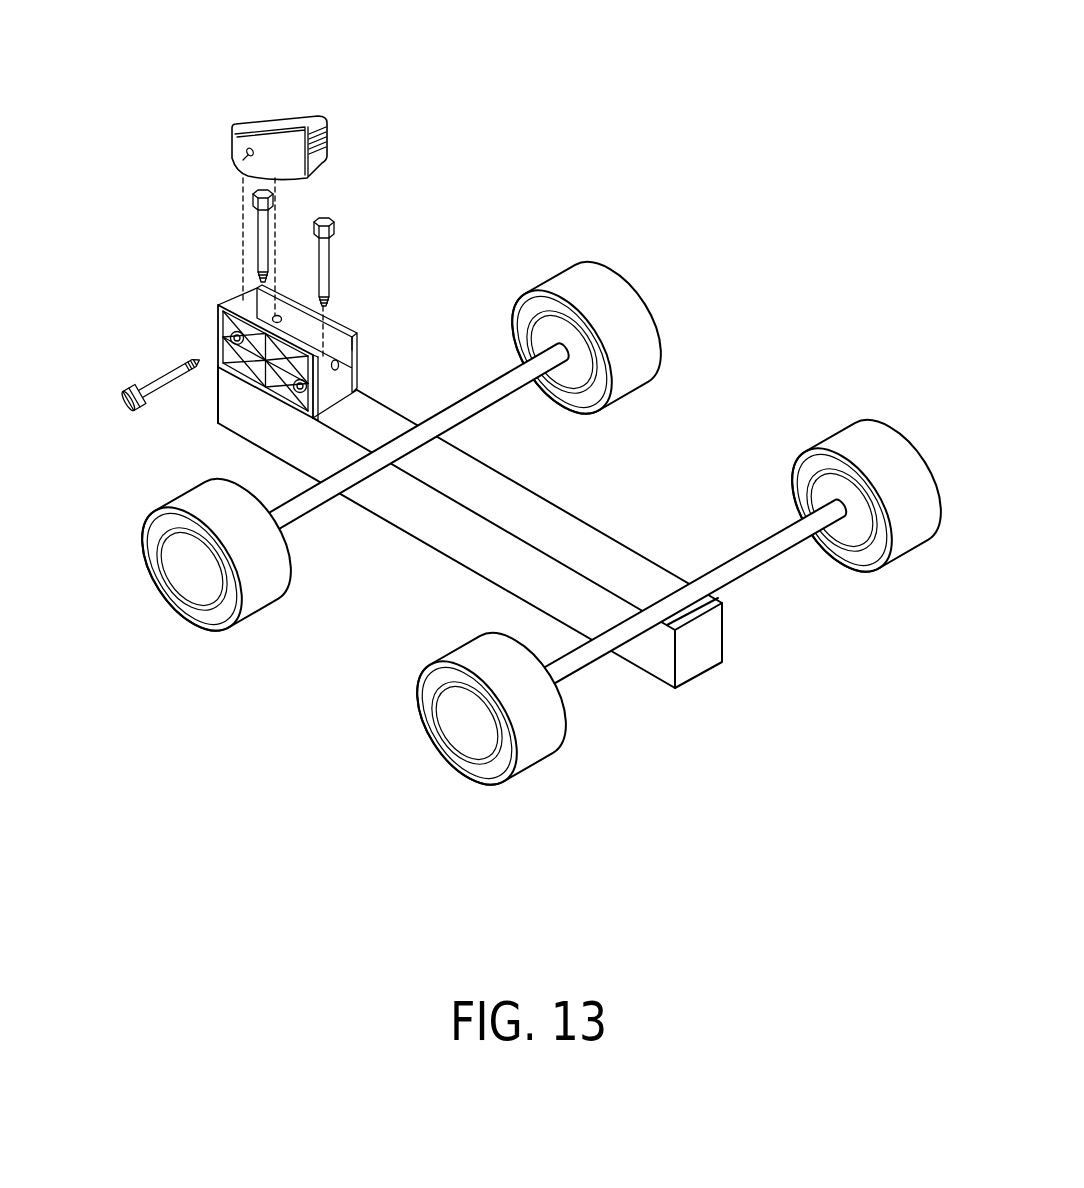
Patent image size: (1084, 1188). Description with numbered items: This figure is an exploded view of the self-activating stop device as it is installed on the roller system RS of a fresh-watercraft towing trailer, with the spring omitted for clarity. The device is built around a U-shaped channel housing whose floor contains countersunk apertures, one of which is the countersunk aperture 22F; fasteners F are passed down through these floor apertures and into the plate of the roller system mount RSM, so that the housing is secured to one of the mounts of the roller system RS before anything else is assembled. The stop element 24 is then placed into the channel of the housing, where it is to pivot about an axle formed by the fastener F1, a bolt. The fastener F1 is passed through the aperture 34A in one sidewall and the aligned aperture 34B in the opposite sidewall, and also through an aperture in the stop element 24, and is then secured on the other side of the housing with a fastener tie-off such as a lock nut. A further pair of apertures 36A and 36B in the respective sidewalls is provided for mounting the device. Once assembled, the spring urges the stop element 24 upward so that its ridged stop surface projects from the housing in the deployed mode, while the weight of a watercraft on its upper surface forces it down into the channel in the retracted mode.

The stop element 24 is at (300, 106).
The aperture 34A is at (228, 343).
The aperture 34B is at (277, 316).
The aperture 36A is at (300, 393).
The aperture 36B is at (355, 327).
The countersunk aperture 22F is at (357, 380).
The fasteners F is at (262, 227).
The fastener F1 is at (157, 354).
The roller system mount RSM is at (548, 527).
The roller system RS is at (531, 532).